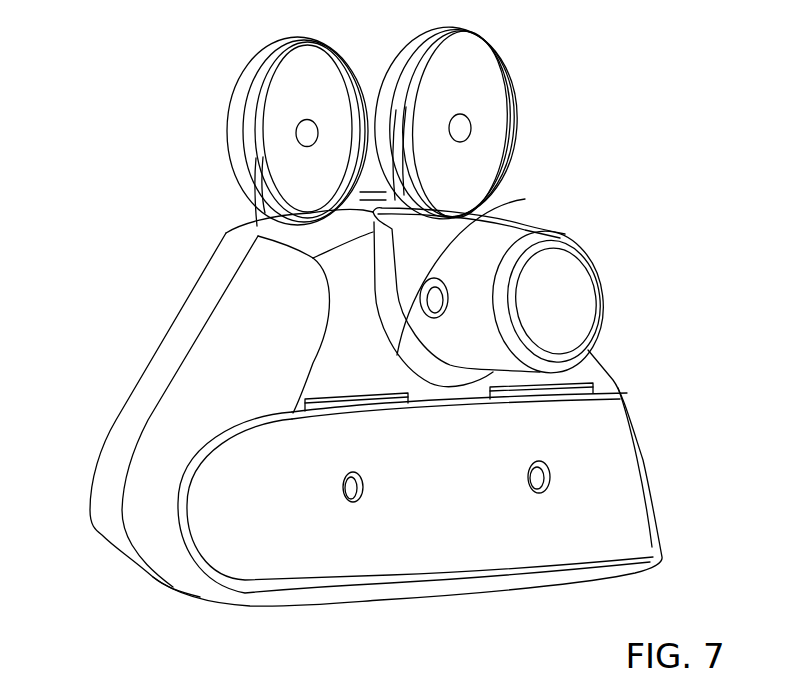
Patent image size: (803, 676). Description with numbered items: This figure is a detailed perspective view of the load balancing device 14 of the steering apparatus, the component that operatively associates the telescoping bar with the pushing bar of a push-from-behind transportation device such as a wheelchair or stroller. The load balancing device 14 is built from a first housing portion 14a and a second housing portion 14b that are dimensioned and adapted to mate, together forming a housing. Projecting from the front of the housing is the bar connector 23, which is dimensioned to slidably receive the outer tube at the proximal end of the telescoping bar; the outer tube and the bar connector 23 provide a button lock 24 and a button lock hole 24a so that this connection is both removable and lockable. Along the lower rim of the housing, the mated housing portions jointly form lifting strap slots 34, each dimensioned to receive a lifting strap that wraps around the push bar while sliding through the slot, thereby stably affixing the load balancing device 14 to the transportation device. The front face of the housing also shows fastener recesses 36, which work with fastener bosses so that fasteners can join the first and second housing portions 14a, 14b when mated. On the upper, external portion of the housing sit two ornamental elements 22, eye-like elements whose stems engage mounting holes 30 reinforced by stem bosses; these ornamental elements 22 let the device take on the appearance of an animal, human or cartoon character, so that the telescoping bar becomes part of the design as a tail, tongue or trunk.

The load balancing device 14 is at (166, 333).
The first housing portion 14a is at (130, 415).
The second housing portion 14b is at (160, 547).
The ornamental elements 22 is at (343, 82).
The mounting holes 30 is at (304, 130).
The bar connector 23 is at (585, 303).
The button lock 24 is at (397, 356).
The button lock hole 24a is at (525, 199).
The lifting strap slots 34 is at (382, 412).
The fastener recesses 36 is at (367, 497).